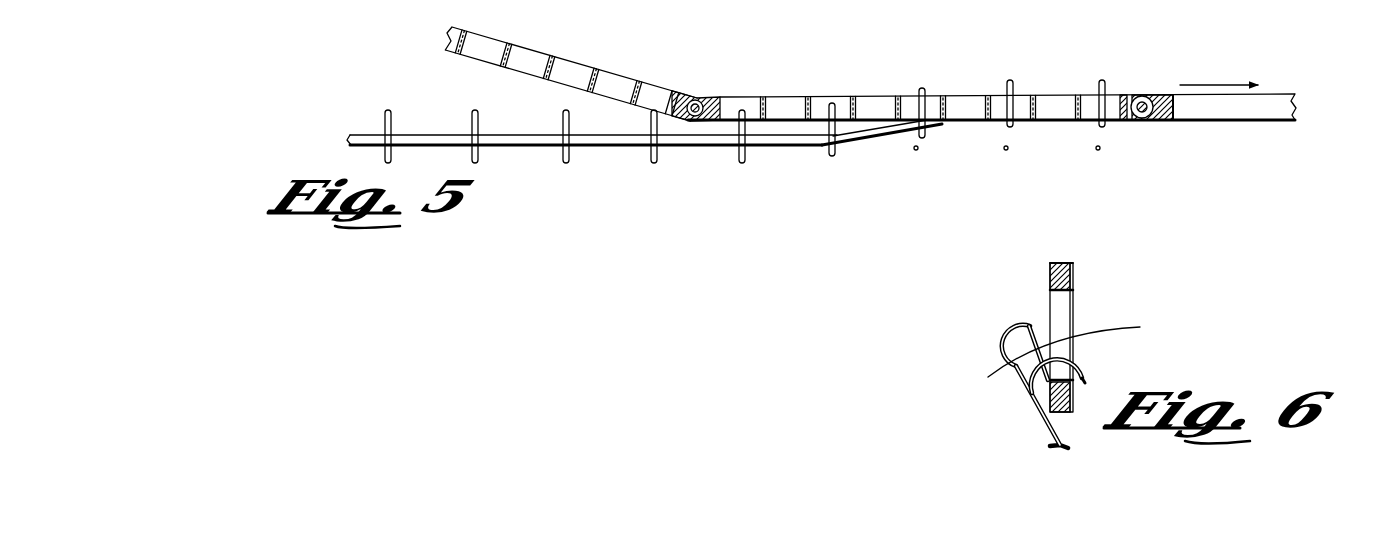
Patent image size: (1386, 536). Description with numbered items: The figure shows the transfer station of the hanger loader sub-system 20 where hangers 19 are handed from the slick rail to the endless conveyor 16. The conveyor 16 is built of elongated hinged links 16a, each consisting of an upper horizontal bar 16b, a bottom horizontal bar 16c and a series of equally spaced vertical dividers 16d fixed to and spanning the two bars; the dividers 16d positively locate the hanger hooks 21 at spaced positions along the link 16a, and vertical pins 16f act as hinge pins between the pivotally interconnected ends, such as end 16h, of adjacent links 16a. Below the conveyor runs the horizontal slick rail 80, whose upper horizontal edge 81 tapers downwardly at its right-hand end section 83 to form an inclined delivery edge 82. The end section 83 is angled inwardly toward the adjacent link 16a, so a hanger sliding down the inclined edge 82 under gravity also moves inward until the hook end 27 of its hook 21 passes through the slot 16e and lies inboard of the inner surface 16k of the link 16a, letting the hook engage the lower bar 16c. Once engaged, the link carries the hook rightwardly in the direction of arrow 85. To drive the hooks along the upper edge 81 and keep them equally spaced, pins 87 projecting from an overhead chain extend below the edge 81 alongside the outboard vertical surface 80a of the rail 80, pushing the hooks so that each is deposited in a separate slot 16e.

In FIG. 5, the endless conveyor 16 is at (1314, 103).
In FIG. 6, the endless conveyor 16 is at (1077, 260).
In FIG. 5, the hinged link 16a is at (669, 90).
In FIG. 6, the hinged link 16a is at (1058, 263).
In FIG. 6, the upper horizontal bar 16b is at (1073, 272).
In FIG. 6, the bottom horizontal bar 16c is at (1073, 395).
In FIG. 5, the vertical divider 16d is at (987, 102).
In FIG. 6, the vertical divider 16d is at (1068, 308).
In FIG. 5, the slot 16e is at (1090, 93).
In FIG. 5, the vertical pin 16f is at (1147, 100).
In FIG. 5, the link end 16h is at (1165, 120).
In FIG. 5, the inner surface 16k is at (870, 97).
In FIG. 6, the inner surface 16k is at (1075, 348).
In FIG. 5, the hanger 19 is at (566, 163).
In FIG. 6, the hanger 19 is at (1032, 406).
In FIG. 5, the hanger loader sub-system 20 is at (633, 253).
In FIG. 6, the hanger hook 21 is at (1003, 352).
In FIG. 6, the hook end 27 is at (1084, 380).
In FIG. 5, the horizontal slick rail 80 is at (530, 136).
In FIG. 5, the outboard vertical surface 80a is at (627, 150).
In FIG. 6, the outboard vertical surface 80a is at (1030, 358).
In FIG. 5, the upper horizontal edge 81 is at (613, 118).
In FIG. 6, the upper horizontal edge 81 is at (1031, 327).
In FIG. 5, the inclined delivery edge 82 is at (895, 135).
In FIG. 6, the inclined delivery edge 82 is at (1077, 346).
In FIG. 5, the slick rail end section 83 is at (820, 143).
In FIG. 5, the arrow 85 is at (1217, 82).
In FIG. 5, the pin 87 is at (737, 148).